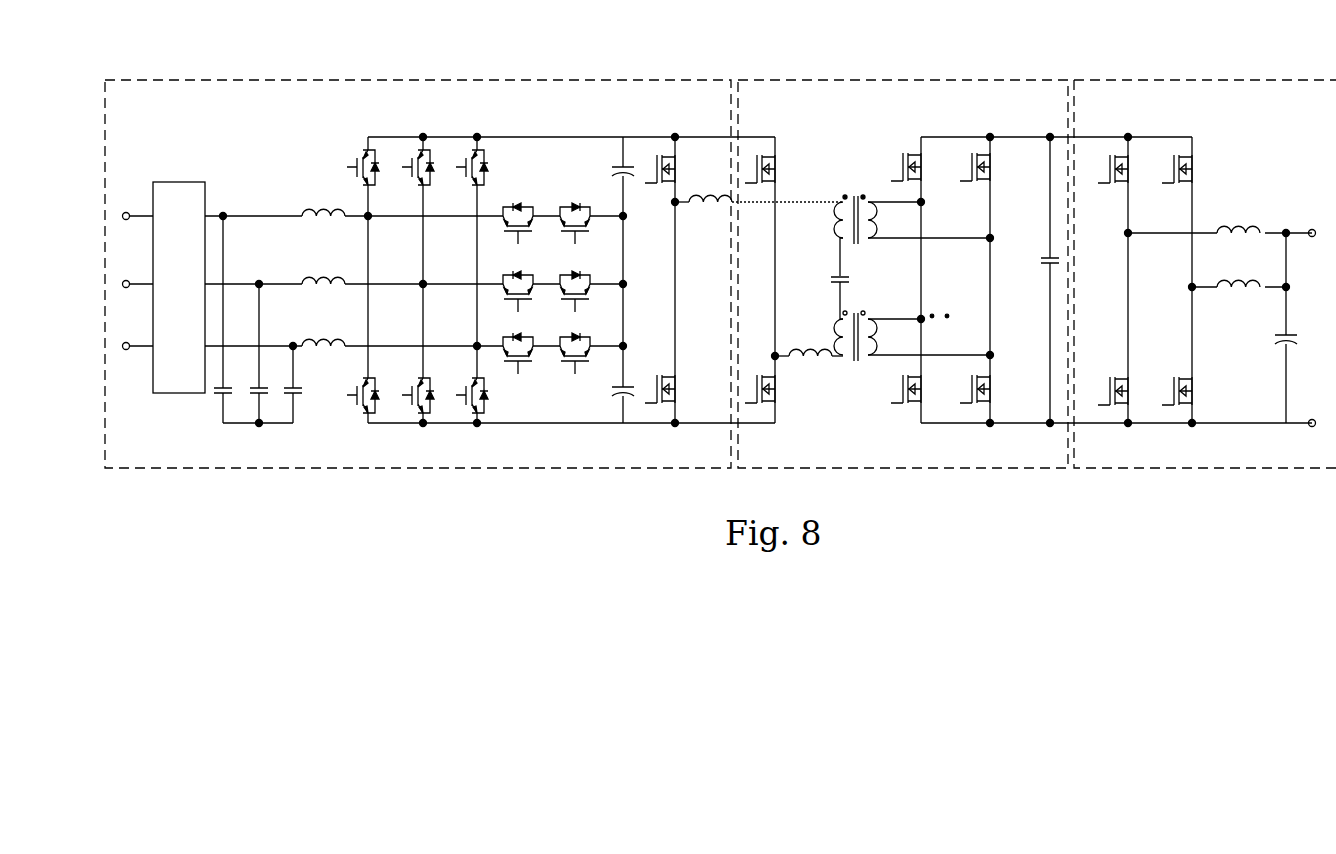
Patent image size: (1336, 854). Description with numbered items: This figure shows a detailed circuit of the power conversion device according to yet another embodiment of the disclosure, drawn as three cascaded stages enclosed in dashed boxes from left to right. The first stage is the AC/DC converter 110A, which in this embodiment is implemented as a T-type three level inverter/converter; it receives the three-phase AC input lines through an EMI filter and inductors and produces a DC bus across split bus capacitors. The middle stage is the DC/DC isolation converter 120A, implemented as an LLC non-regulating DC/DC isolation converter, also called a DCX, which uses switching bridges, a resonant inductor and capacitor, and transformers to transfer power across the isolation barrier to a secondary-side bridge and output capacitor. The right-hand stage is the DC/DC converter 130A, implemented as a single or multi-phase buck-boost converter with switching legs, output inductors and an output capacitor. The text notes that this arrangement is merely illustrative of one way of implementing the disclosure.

The AC/DC converter 110A is at (428, 80).
The DC/DC isolation converter 120A is at (911, 80).
The DC/DC converter 130A is at (1225, 80).